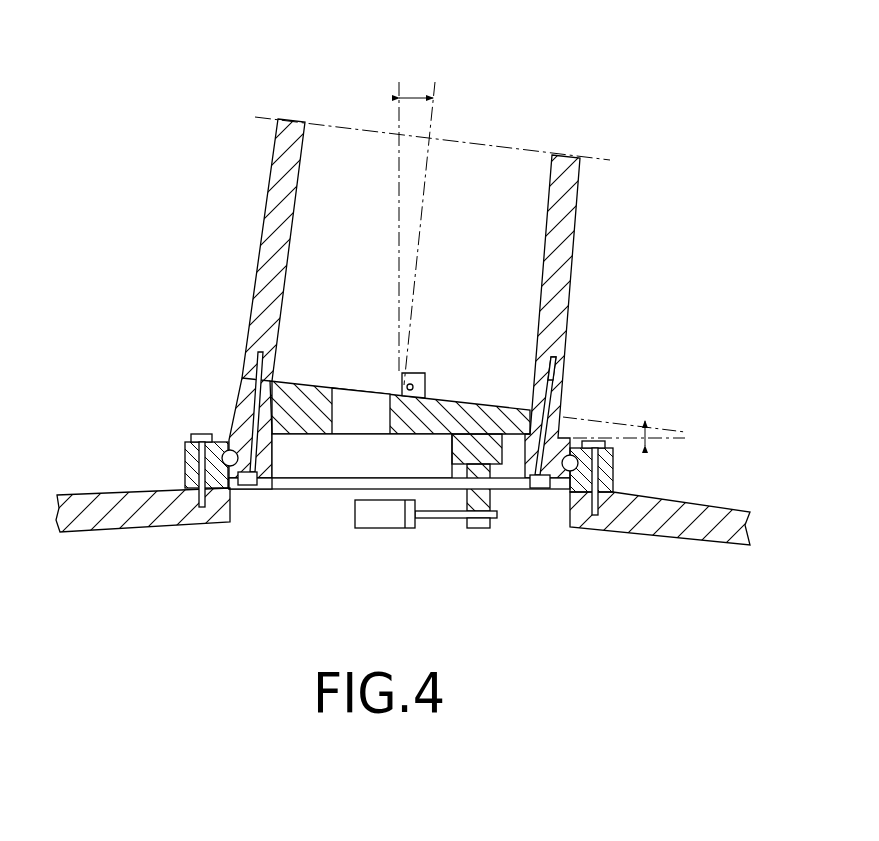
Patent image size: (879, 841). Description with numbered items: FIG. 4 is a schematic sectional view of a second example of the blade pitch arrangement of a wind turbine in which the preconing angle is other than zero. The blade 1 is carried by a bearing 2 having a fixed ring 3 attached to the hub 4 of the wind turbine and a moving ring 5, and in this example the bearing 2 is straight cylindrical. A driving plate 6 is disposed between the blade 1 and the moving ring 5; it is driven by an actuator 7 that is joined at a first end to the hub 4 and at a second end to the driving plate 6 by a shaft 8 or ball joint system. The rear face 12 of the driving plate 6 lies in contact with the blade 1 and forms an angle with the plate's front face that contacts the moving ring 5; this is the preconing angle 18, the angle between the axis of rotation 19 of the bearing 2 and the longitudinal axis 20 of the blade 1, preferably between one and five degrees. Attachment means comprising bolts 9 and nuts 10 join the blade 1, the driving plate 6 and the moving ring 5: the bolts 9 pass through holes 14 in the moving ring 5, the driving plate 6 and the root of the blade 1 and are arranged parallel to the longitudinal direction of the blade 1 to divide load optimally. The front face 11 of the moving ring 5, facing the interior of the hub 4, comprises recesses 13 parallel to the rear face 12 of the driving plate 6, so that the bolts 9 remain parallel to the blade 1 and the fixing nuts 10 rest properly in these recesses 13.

The blade 1 is at (262, 249).
The bearing 2 is at (622, 471).
The fixed ring 3 is at (186, 450).
The hub 4 is at (118, 517).
The moving ring 5 is at (337, 468).
The driving plate 6 is at (467, 436).
The actuator 7 is at (390, 524).
The shaft 8 is at (478, 508).
The bolts 9 is at (563, 388).
The nuts 10 is at (248, 487).
The front face of the moving ring 11 is at (345, 493).
The rear face of the driving plate 12 is at (312, 386).
The recesses 13 is at (258, 490).
The holes 14 is at (563, 361).
The preconing angle 18 is at (410, 95).
The axis of rotation 19 is at (396, 250).
The longitudinal axis 20 is at (422, 245).